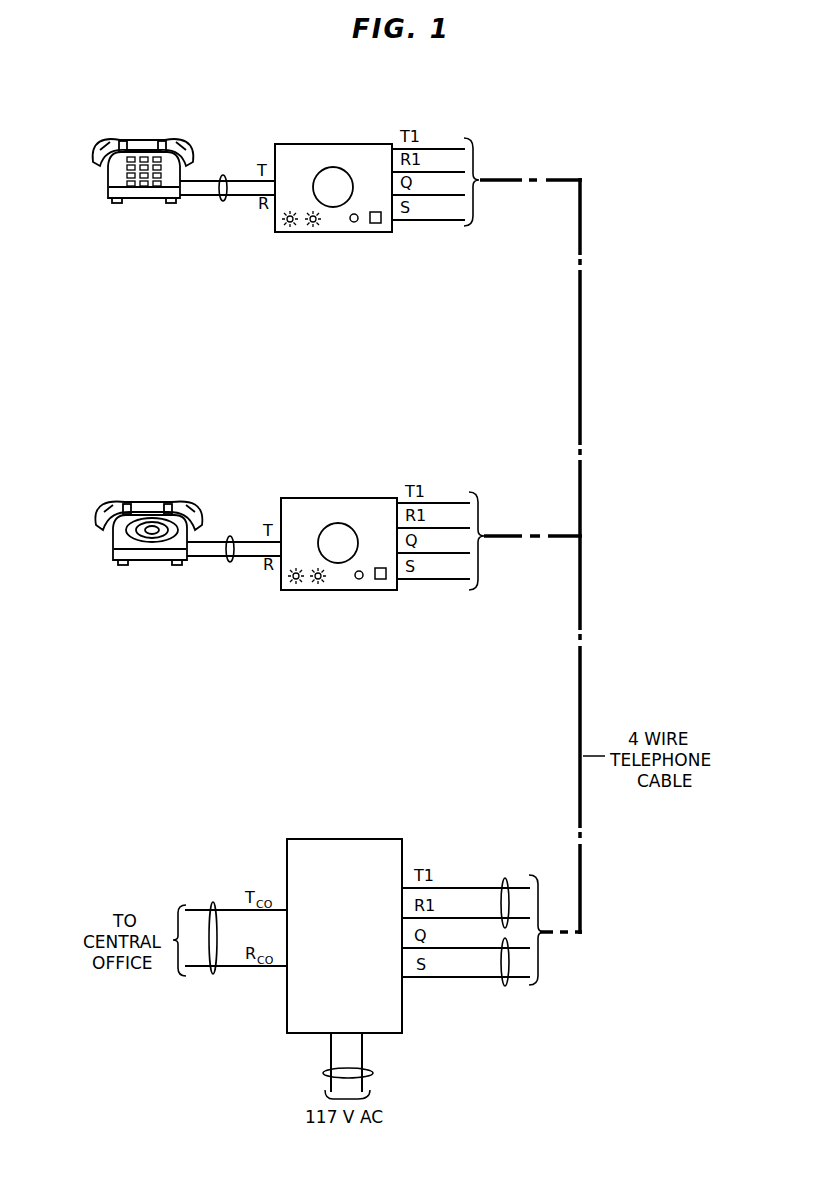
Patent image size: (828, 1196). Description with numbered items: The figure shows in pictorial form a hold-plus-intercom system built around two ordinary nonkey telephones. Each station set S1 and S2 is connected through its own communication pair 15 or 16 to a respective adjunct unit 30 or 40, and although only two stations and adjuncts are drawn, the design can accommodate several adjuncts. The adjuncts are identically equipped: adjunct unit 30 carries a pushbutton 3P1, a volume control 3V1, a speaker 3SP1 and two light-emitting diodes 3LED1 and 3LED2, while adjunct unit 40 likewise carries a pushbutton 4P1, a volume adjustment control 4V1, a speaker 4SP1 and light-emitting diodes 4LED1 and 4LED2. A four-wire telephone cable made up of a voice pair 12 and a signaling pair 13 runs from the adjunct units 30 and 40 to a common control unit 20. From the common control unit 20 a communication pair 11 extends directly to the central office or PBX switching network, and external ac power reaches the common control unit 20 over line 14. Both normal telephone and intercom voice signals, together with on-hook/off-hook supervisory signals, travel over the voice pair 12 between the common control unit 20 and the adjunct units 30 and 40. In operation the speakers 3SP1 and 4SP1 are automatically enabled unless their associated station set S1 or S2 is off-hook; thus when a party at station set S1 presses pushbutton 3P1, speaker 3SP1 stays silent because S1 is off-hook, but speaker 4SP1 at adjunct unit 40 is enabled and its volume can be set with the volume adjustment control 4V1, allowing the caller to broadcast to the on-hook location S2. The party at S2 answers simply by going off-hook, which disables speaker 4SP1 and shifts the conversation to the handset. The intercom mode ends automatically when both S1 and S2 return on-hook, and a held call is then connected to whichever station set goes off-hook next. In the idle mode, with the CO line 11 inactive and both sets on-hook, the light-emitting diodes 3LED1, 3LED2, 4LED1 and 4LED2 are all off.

The nonkey station set S1 is at (150, 137).
The nonkey station set S2 is at (162, 500).
The communication pair 15 is at (223, 175).
The communication pair 16 is at (230, 536).
The adjunct unit 30 is at (336, 144).
The adjunct unit 40 is at (341, 498).
The light-emitting diode 3LED1 is at (290, 228).
The light-emitting diode 3LED2 is at (313, 228).
The speaker 3SP1 is at (335, 207).
The volume control 3V1 is at (355, 223).
The pushbutton 3P1 is at (375, 224).
The light-emitting diode 4LED1 is at (296, 585).
The light-emitting diode 4LED2 is at (318, 585).
The speaker 4SP1 is at (340, 563).
The volume adjustment control 4V1 is at (360, 580).
The pushbutton 4P1 is at (380, 580).
The common control unit 20 is at (362, 839).
The communication pair 11 is at (214, 900).
The voice pair 12 is at (505, 877).
The signaling pair 13 is at (505, 987).
The line 14 is at (323, 1073).